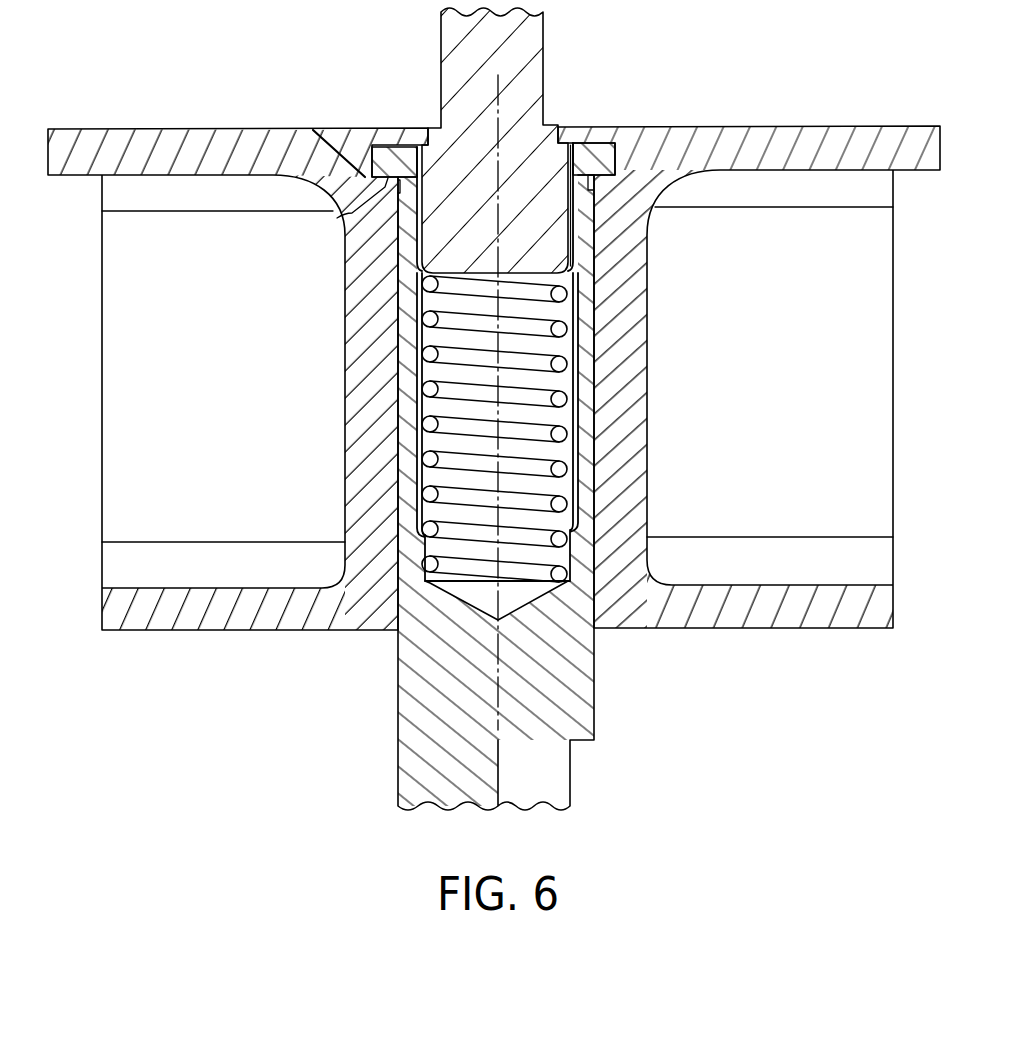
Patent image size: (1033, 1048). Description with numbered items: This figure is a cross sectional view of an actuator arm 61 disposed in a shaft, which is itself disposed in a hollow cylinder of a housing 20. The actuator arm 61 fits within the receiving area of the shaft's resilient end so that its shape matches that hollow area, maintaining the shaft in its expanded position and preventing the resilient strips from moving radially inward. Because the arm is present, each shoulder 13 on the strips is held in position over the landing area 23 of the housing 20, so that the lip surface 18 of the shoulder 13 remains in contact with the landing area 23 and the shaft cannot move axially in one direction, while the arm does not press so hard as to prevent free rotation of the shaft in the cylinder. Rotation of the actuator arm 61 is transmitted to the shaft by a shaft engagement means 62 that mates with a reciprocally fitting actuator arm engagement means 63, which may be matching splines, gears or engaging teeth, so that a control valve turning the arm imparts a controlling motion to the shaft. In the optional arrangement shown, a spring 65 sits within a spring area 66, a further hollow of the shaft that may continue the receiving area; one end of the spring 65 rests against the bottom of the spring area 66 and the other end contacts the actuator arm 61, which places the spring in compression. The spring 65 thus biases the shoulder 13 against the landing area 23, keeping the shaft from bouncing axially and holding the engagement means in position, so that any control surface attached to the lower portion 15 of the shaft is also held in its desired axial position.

The housing 20 is at (187, 130).
The landing area 23 is at (365, 175).
The actuator arm 61 is at (437, 138).
The shoulder 13 is at (596, 153).
The lip surface 18 is at (337, 218).
The shaft engagement means 62 is at (573, 200).
The actuator arm engagement means 63 is at (573, 233).
The spring area 66 is at (568, 348).
The spring 65 is at (568, 438).
The lower portion 15 is at (398, 750).